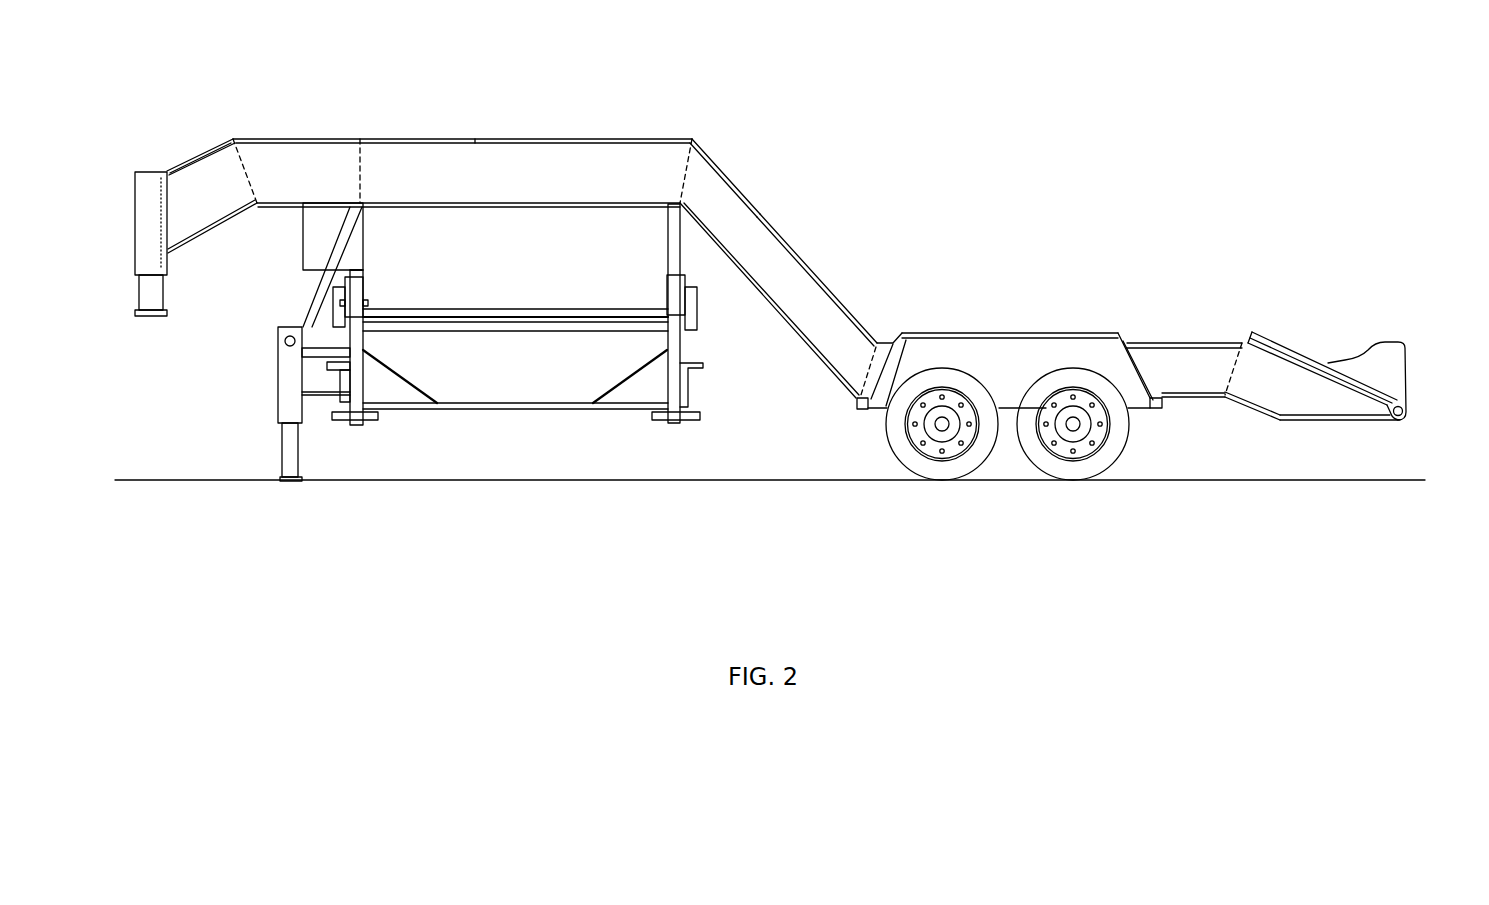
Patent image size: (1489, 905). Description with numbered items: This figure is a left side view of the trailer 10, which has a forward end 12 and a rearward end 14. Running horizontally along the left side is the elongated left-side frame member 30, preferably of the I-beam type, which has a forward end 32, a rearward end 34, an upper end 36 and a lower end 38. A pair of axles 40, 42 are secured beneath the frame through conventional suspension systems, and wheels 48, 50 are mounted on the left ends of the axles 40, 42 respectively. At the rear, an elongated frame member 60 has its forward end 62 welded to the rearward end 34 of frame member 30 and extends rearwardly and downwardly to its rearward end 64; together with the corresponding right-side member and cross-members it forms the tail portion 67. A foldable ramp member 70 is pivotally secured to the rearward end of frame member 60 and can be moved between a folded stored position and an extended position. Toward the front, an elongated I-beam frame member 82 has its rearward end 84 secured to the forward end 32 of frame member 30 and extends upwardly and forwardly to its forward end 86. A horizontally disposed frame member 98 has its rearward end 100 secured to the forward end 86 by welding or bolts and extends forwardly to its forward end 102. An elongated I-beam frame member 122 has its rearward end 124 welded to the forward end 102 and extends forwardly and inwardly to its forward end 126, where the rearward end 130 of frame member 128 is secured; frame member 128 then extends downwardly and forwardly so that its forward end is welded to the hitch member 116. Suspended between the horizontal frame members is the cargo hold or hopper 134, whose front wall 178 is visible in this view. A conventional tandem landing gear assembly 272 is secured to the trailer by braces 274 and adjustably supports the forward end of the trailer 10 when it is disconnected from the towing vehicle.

The trailer 10 is at (768, 140).
The forward end 12 is at (131, 232).
The rearward end 14 is at (1349, 409).
The left-side frame member 30 is at (1200, 301).
The forward end 32 is at (175, 212).
The rearward end 34 is at (1240, 345).
The upper end 36 is at (1135, 343).
The lower end 38 is at (1189, 400).
The axle 40 is at (910, 460).
The axle 42 is at (1089, 463).
The wheel 48 is at (903, 452).
The wheel 50 is at (1110, 457).
The frame member 60 is at (1310, 407).
The forward end 62 is at (1230, 378).
The rearward end 64 is at (1378, 420).
The tail portion 67 is at (1343, 434).
The foldable ramp member 70 is at (1306, 347).
The frame member 82 is at (778, 211).
The rearward end 84 is at (868, 368).
The forward end 86 is at (693, 163).
The frame member 98 is at (462, 109).
The rearward end 100 is at (683, 172).
The forward end 102 is at (367, 163).
The hitch member 116 is at (132, 257).
The frame member 122 is at (290, 140).
The rearward end 124 is at (350, 165).
The forward end 126 is at (247, 167).
The frame member 128 is at (192, 245).
The rearward end 130 is at (187, 173).
The cargo hold or hopper 134 is at (461, 275).
The front wall 178 is at (327, 222).
The tandem landing gear assembly 272 is at (279, 380).
The braces 274 is at (340, 248).